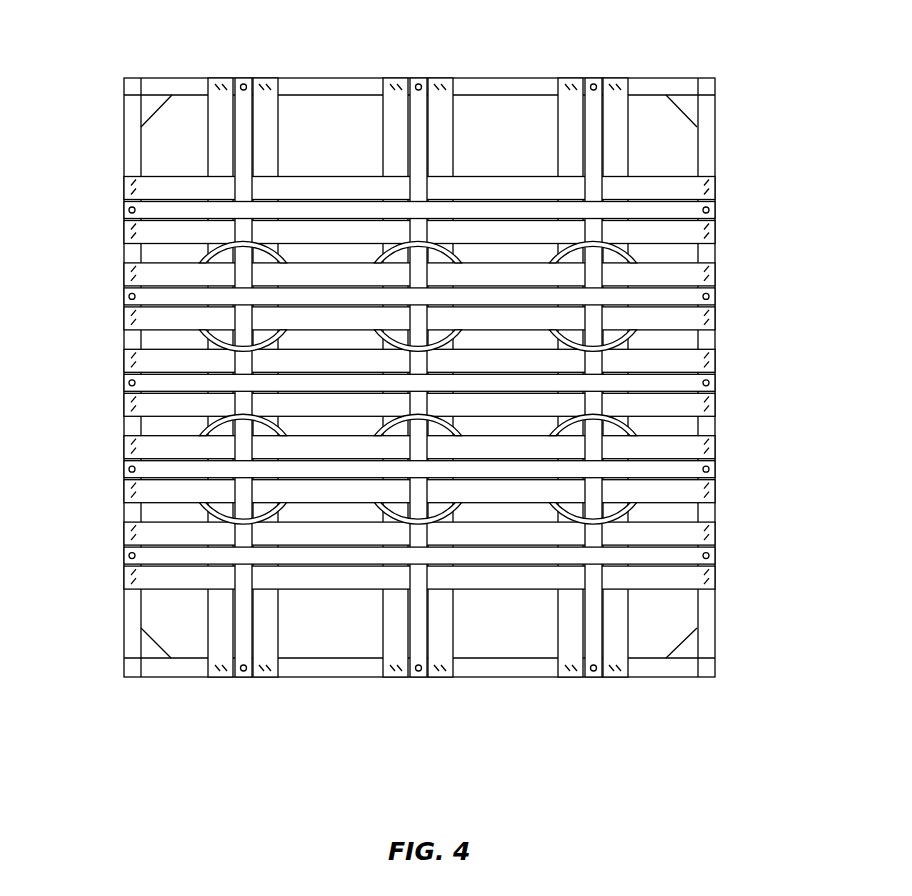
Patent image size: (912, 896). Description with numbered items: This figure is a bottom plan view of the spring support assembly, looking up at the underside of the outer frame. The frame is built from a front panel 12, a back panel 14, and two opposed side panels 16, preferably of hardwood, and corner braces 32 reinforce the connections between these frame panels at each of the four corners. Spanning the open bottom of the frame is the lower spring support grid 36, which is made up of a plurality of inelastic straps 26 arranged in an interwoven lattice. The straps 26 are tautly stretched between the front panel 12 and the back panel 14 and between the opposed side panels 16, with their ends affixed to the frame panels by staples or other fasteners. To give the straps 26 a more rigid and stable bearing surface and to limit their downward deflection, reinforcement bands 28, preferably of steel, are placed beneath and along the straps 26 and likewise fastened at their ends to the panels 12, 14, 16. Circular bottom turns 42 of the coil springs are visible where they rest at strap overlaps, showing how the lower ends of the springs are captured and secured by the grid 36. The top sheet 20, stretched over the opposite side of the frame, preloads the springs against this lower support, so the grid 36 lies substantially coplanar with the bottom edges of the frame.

The front panel 12 is at (132, 158).
The back panel 14 is at (708, 152).
The side panels 16 is at (527, 88).
The top sheet 20 is at (528, 147).
The inelastic straps 26 is at (155, 533).
The reinforcement bands 28 is at (155, 472).
The corner braces 32 is at (153, 103).
The lower spring support grid 36 is at (735, 392).
The bottom turn 42 is at (393, 518).